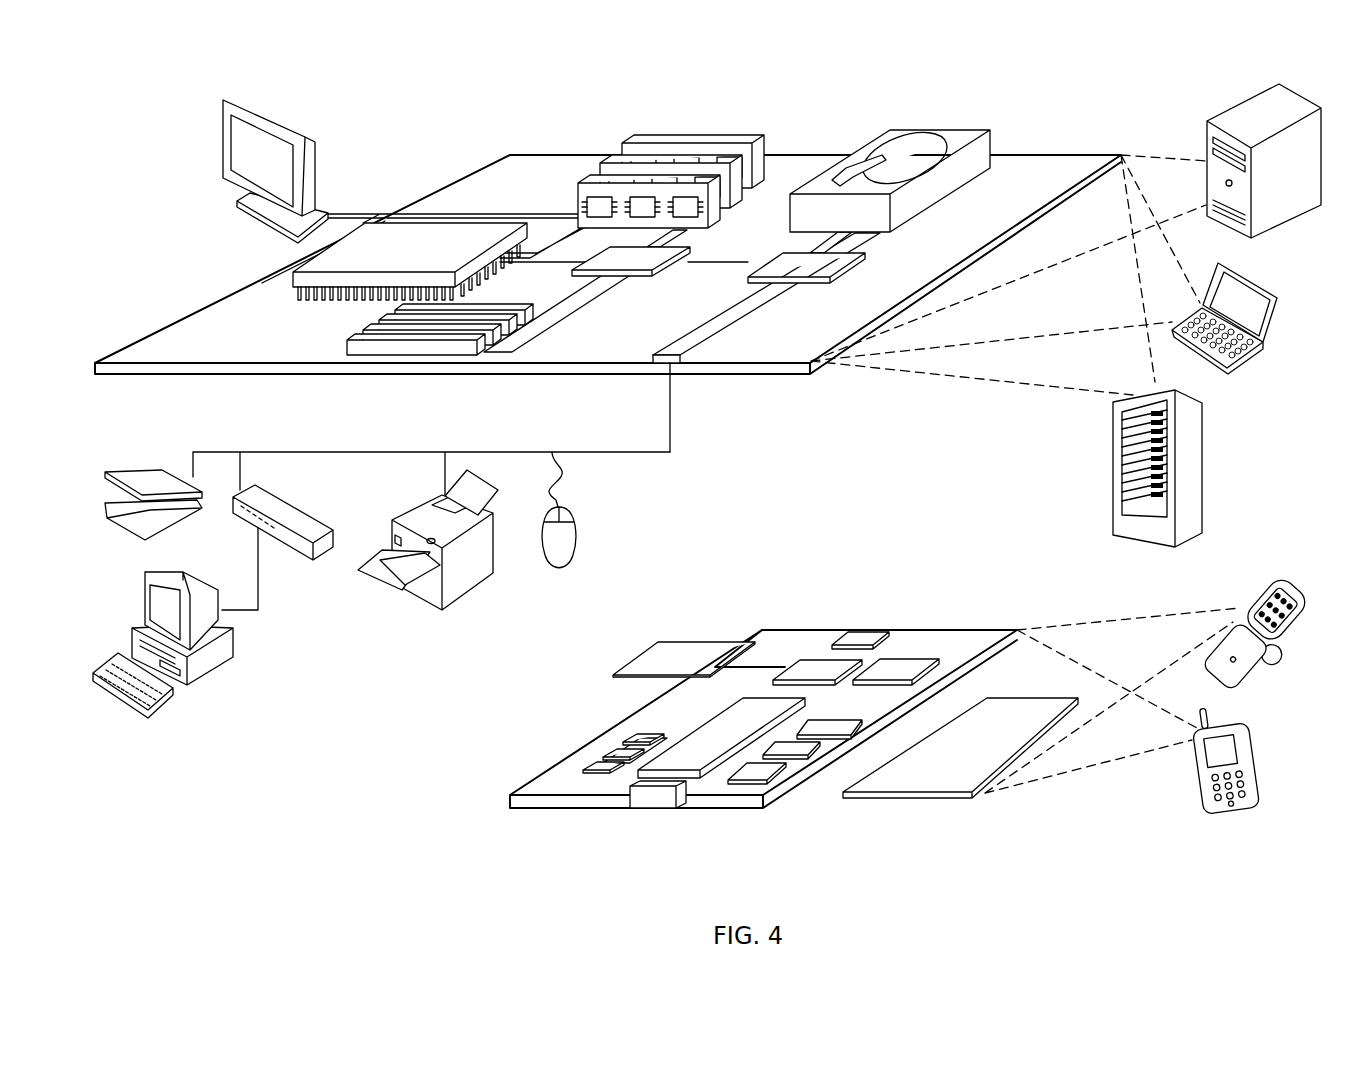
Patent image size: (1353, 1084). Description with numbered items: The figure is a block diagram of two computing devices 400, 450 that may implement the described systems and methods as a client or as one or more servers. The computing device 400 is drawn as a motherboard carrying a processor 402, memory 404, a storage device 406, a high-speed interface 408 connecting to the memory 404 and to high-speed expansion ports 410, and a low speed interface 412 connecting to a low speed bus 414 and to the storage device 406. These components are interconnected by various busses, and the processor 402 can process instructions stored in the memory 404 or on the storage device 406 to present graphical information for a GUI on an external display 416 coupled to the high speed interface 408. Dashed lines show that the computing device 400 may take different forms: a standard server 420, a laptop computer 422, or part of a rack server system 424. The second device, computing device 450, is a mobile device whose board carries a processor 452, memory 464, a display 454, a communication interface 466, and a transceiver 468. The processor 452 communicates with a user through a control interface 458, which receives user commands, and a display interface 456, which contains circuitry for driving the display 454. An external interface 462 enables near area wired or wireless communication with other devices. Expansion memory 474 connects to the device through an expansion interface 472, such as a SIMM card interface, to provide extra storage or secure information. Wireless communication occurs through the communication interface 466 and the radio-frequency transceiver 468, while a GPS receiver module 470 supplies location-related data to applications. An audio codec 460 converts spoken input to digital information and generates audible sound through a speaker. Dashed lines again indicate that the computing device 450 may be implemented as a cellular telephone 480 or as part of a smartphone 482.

The computing device 400 is at (423, 120).
The processor 402 is at (300, 277).
The memory 404 is at (632, 143).
The storage device 406 is at (882, 140).
The high-speed interface 408 is at (608, 259).
The high-speed expansion ports 410 is at (370, 337).
The low speed interface 412 is at (788, 262).
The low speed bus 414 is at (676, 365).
The display 416 is at (225, 100).
The standard server 420 is at (1207, 142).
The laptop computer 422 is at (1278, 297).
The rack server system 424 is at (1111, 492).
The computing device 450 is at (483, 813).
The processor 452 is at (693, 762).
The display 454 is at (937, 779).
The display interface 456 is at (762, 770).
The control interface 458 is at (800, 750).
The audio codec 460 is at (825, 725).
The external interface 462 is at (657, 787).
The memory 464 is at (605, 756).
The communication interface 466 is at (818, 668).
The transceiver 468 is at (897, 668).
The GPS receiver module 470 is at (868, 634).
The expansion interface 472 is at (742, 642).
The expansion memory 474 is at (672, 642).
The cellular telephone 480 is at (1263, 584).
The smartphone 482 is at (1198, 763).